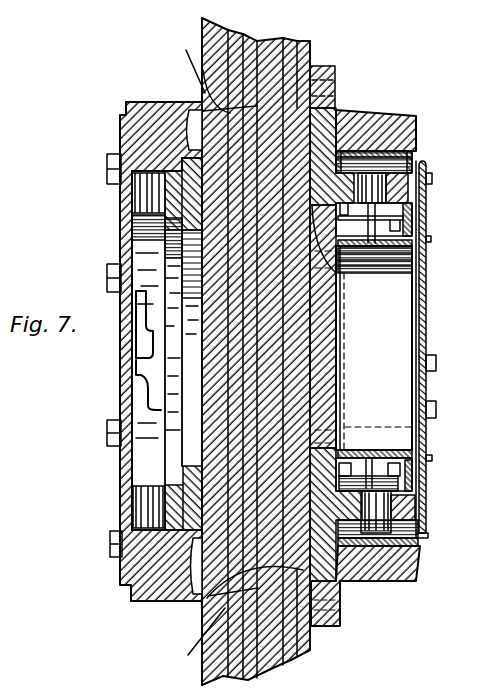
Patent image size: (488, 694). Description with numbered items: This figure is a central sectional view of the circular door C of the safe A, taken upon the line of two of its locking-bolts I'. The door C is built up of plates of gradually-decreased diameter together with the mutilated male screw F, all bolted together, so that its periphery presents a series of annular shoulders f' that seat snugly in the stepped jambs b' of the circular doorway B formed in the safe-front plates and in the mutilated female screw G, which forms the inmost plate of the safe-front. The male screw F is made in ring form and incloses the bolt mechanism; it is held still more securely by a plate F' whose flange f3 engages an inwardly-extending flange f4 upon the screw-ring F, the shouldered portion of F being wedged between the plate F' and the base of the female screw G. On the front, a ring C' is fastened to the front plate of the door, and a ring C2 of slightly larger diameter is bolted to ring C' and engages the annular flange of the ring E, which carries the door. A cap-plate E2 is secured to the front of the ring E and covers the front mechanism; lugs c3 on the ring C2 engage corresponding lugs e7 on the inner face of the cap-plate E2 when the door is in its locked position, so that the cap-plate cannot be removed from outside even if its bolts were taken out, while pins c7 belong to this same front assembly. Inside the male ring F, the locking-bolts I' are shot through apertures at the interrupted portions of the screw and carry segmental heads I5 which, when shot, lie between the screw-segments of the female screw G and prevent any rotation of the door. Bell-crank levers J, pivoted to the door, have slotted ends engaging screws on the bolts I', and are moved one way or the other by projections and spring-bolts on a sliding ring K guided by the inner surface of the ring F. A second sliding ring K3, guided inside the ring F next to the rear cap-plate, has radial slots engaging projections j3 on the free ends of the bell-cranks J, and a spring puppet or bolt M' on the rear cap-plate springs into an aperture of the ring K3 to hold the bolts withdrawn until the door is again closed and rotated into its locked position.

The safe A is at (302, 37).
The circular aperture or doorway B is at (300, 644).
The stepped jambs b' is at (193, 356).
The annular shoulders f' is at (259, 356).
The ring E is at (128, 103).
The cap-plate E2 is at (118, 404).
The pins c7 is at (135, 185).
The lugs c3 is at (135, 361).
The ring C2 is at (128, 223).
The ring C' is at (140, 357).
The lugs e7 is at (130, 329).
The circular door C is at (207, 354).
The mutilated female screw G is at (387, 111).
The segmental heads I5 is at (406, 152).
The locking-bolts I' is at (398, 531).
The plate F' is at (430, 504).
The mutilated male screw F is at (421, 188).
The sliding ring K3 is at (406, 211).
The projections j3 is at (406, 230).
The sliding ring K is at (416, 254).
The flange f3 is at (387, 442).
The inwardly-extending flange f4 is at (337, 273).
The bell-crank levers J is at (367, 474).
The spring puppet or bolt M' is at (446, 349).